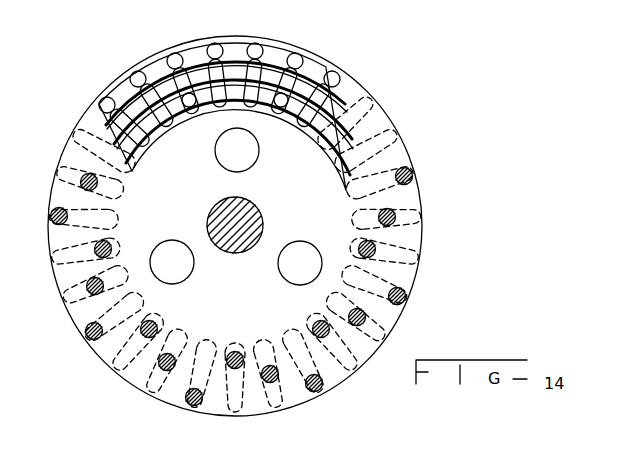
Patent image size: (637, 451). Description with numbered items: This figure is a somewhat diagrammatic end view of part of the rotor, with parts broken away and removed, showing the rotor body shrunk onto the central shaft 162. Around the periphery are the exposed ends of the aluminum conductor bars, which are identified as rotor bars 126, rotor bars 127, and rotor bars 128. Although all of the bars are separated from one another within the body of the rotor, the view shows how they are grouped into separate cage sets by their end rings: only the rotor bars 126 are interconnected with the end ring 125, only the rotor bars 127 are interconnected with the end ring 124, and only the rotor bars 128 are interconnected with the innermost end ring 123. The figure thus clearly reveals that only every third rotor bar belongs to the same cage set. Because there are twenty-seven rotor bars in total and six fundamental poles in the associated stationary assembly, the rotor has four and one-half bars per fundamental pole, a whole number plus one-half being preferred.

The innermost end ring 123 is at (340, 152).
The end ring 124 is at (370, 130).
The end ring 125 is at (313, 63).
The rotor bars 126 is at (99, 100).
The rotor bars 127 is at (258, 45).
The rotor bars 128 is at (305, 63).
The shaft 162 is at (252, 216).